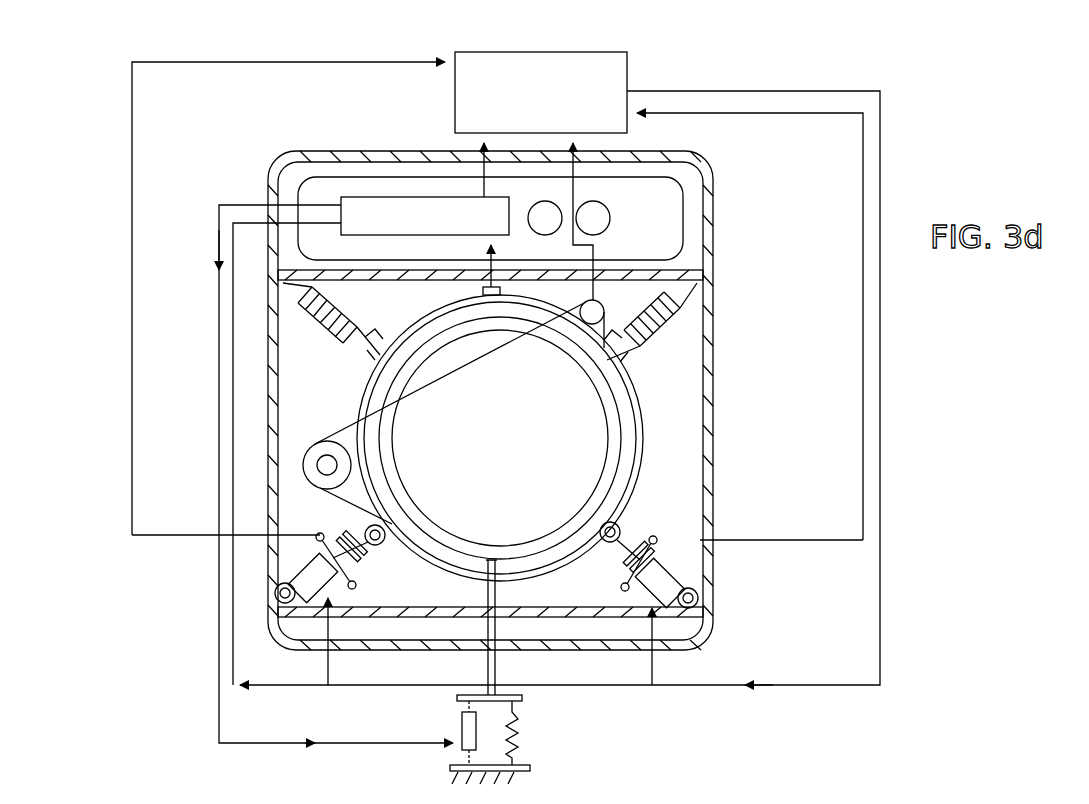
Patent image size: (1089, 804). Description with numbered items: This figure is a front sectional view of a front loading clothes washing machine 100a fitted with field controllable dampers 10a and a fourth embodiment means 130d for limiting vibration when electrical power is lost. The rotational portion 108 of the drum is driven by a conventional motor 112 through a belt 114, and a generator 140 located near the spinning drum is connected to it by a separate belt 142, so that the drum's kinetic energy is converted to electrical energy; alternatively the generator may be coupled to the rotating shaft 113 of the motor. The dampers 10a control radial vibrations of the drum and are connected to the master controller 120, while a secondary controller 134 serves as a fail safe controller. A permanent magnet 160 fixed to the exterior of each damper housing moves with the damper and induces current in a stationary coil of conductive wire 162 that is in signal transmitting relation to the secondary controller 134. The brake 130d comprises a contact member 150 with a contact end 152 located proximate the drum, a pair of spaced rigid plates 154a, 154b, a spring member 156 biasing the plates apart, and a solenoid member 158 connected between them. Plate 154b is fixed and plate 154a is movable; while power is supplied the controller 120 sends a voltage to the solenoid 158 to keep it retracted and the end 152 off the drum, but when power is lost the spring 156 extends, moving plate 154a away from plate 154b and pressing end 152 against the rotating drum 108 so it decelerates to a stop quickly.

The front loading clothes washing machine 100a is at (202, 183).
The master controller 120 is at (370, 197).
The secondary controller 134 is at (628, 72).
The rotational portion of drum 108 is at (600, 455).
The drive belt 142 is at (615, 385).
The motor drive belt 114 is at (343, 418).
The generator 140 is at (607, 300).
The motor 112 is at (305, 463).
The rotating shaft 113 is at (316, 458).
The contact end 152 is at (488, 560).
The contact member 150 is at (483, 630).
The permanent magnet 160 is at (310, 565).
The field controllable damper 10a is at (670, 577).
The coil of conductive wire 162 is at (320, 534).
The solenoid member 158 is at (463, 722).
The movable rigid plate 154a is at (520, 698).
The fixed rigid plate 154b is at (530, 768).
The spring member 156 is at (513, 728).
The fourth embodiment means for limiting vibration 130d is at (437, 762).